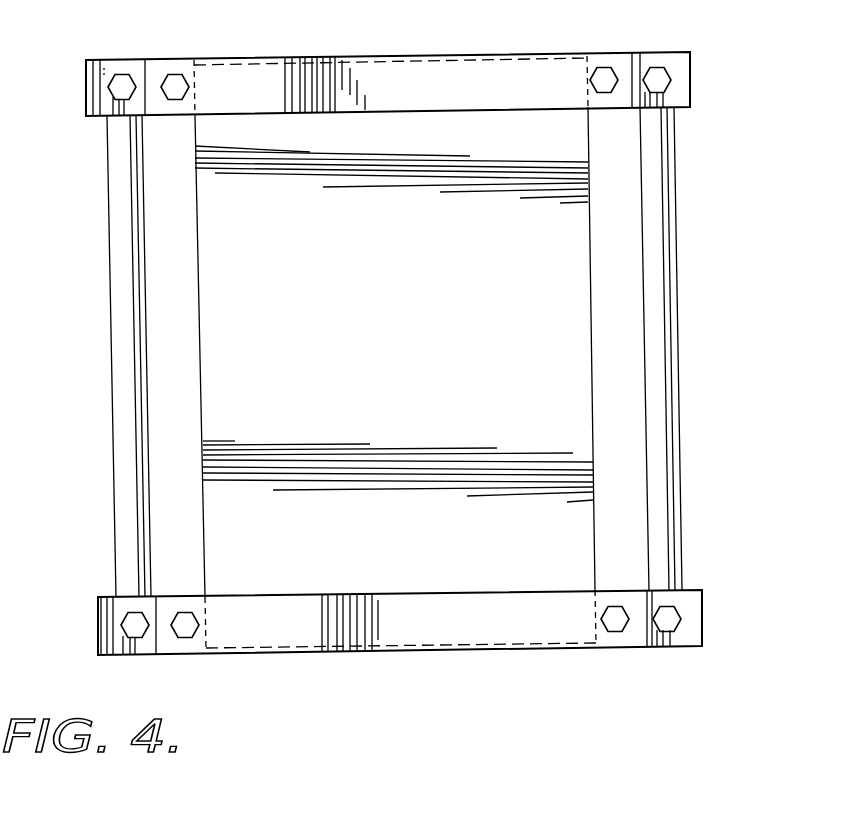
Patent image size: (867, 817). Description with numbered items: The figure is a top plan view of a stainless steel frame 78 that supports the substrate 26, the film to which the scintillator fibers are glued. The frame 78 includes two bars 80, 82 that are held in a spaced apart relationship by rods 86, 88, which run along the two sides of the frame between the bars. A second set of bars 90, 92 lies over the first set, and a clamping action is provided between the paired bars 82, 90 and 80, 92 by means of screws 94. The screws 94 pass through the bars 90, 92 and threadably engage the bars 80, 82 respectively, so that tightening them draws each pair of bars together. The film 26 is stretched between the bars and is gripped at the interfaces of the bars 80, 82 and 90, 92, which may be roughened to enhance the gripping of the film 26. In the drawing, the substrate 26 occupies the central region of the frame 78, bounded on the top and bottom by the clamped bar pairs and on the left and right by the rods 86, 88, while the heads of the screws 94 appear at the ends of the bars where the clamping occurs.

The substrate 26 is at (411, 337).
The stainless steel frame 78 is at (420, 354).
The bar 80 is at (697, 632).
The bar 82 is at (687, 58).
The rod 86 is at (118, 378).
The rod 88 is at (675, 358).
The bar 90 is at (318, 638).
The bar 92 is at (397, 67).
The screws 94 is at (181, 75).